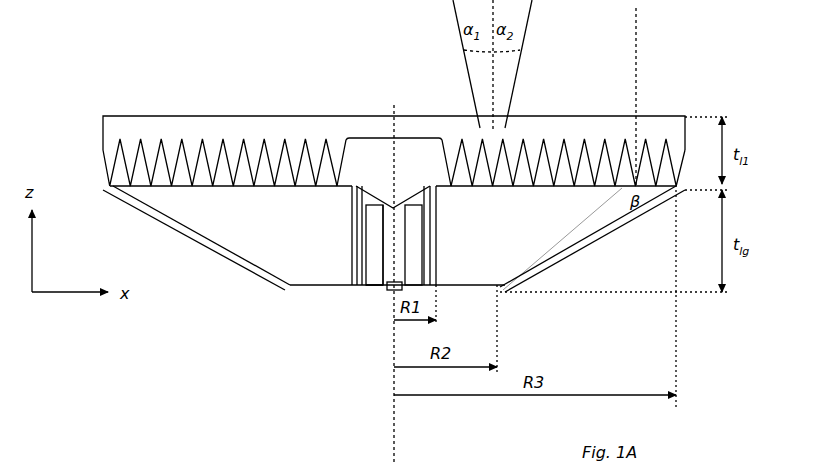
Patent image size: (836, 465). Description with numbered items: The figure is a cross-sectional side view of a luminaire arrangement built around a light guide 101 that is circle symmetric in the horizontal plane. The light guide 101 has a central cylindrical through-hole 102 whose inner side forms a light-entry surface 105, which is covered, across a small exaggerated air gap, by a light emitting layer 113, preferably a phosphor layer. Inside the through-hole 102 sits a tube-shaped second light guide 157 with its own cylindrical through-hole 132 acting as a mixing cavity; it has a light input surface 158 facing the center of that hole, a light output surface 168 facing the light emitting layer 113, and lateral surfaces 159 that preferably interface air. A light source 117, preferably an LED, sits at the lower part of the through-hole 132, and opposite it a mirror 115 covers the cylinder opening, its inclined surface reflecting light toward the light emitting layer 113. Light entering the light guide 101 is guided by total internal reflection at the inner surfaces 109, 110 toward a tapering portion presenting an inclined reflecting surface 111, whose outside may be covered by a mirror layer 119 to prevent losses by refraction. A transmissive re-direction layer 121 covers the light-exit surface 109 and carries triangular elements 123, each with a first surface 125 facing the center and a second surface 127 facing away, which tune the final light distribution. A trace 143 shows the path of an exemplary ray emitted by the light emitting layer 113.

The light guide 101 is at (310, 275).
The cylindrical through-hole 102 is at (368, 295).
The light-entry surface 105 is at (393, 208).
The light-exit surface 109 is at (253, 193).
The inner surface 110 is at (325, 281).
The reflecting surface 111 is at (183, 216).
The light emitting layer 113 is at (353, 229).
The mirror 115 is at (412, 186).
The light source 117 is at (388, 301).
The mirror layer 119 is at (217, 252).
The transmissive re-direction layer 121 is at (133, 115).
The triangular elements 123 is at (112, 182).
The first surface 125 is at (527, 173).
The second surface 127 is at (459, 173).
The cylindrical through-hole 132 is at (383, 291).
The trace 143 is at (637, 38).
The second light guide 157 is at (440, 257).
The lateral surfaces 159 is at (413, 209).
The light input surface 158 is at (402, 237).
The light output surface 168 is at (420, 262).